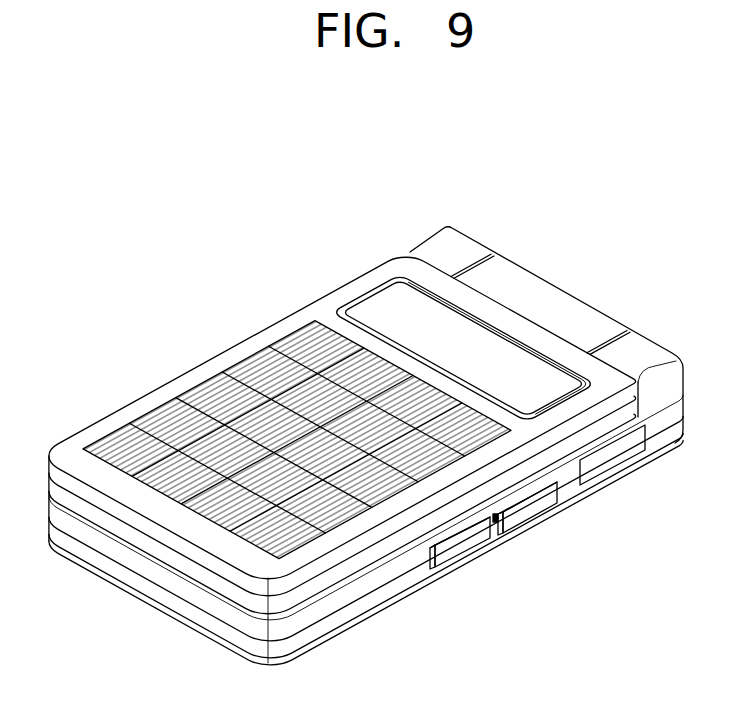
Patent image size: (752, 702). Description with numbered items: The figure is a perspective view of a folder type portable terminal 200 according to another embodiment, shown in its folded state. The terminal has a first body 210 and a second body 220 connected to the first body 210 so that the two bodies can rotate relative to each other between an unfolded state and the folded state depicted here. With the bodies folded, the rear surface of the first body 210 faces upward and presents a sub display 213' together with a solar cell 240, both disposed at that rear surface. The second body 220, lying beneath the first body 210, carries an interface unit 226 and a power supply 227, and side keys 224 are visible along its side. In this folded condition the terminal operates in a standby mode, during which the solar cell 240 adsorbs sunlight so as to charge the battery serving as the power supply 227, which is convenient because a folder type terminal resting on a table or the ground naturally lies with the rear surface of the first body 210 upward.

The portable terminal 200 is at (92, 245).
The first body 210 is at (237, 315).
The sub display 213' is at (446, 329).
The solar cell 240 is at (160, 413).
The interface unit 226 is at (619, 455).
The second body 220 is at (421, 607).
The side keys 224 is at (532, 508).
The power supply 227 is at (340, 626).